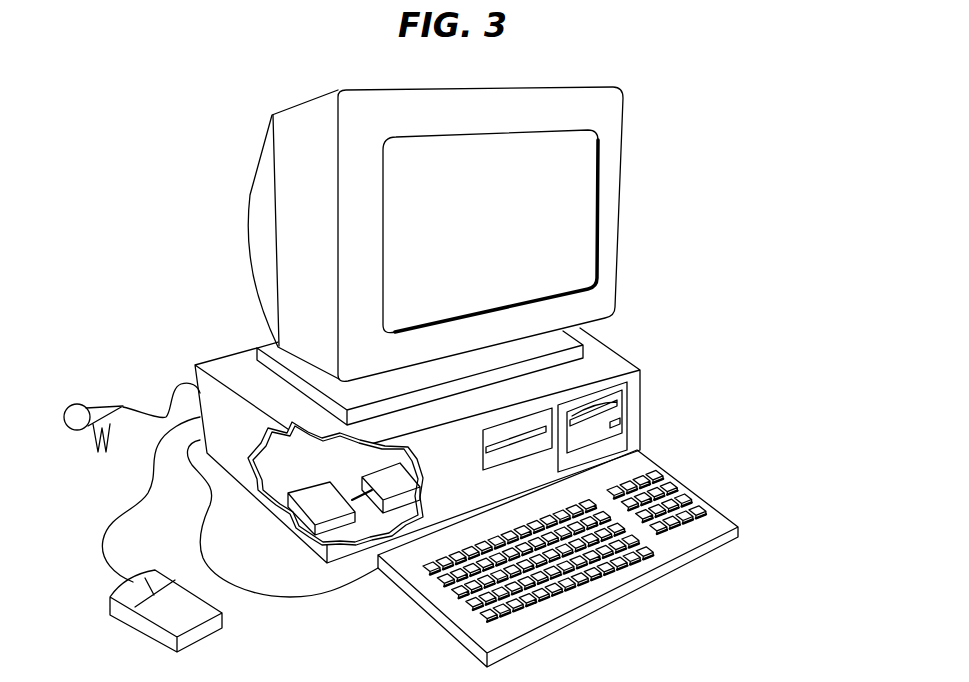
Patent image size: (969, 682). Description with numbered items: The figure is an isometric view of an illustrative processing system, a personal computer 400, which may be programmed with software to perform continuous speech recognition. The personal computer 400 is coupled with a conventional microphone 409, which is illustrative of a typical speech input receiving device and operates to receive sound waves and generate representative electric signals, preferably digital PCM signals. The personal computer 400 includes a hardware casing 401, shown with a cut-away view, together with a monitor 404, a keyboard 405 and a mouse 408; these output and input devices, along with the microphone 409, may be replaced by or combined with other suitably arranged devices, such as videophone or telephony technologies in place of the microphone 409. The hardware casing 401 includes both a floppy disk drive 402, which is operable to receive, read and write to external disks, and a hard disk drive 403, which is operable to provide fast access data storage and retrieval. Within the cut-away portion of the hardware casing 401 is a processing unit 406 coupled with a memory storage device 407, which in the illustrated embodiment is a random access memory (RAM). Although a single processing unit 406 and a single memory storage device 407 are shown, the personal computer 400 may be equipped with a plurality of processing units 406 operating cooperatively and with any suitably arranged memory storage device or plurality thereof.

The personal computer 400 is at (863, 513).
The hardware casing 401 is at (424, 452).
The floppy disk drive 402 is at (632, 412).
The hard disk drive 403 is at (607, 444).
The monitor 404 is at (255, 171).
The keyboard 405 is at (710, 505).
The processing unit 406 is at (377, 463).
The memory storage device 407 is at (300, 487).
The mouse 408 is at (205, 636).
The microphone 409 is at (123, 406).